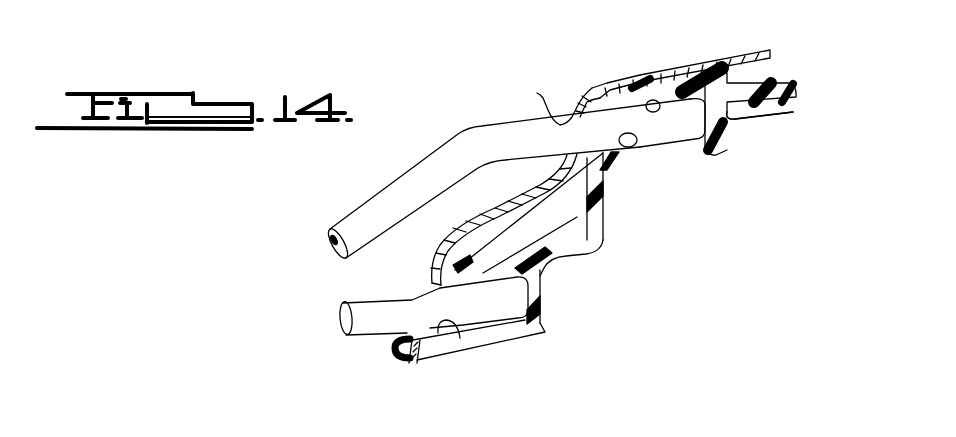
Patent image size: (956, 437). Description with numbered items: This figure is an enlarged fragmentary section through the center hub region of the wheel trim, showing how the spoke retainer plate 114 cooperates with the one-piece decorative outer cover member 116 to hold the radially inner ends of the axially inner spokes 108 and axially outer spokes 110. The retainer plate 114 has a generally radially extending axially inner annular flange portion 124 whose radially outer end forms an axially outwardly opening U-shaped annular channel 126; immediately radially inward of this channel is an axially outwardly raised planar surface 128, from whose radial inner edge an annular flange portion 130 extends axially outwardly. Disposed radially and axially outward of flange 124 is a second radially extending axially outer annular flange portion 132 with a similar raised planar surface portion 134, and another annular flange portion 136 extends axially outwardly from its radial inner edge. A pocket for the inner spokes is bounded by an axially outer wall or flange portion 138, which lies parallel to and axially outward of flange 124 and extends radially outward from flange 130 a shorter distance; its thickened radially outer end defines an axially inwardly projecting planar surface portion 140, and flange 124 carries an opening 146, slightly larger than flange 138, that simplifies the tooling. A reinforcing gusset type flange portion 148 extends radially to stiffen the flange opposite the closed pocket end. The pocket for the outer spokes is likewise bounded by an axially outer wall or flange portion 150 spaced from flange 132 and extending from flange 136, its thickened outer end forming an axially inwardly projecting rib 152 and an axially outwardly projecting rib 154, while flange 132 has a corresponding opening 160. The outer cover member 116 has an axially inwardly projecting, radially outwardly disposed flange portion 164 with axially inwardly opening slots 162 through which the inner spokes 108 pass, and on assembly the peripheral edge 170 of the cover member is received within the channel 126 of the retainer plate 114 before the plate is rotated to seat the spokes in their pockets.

The axially inner spokes 108 is at (360, 323).
The axially outer spokes 110 is at (360, 210).
The spoke retainer plate 114 is at (598, 262).
The outer cover member 116 is at (589, 80).
The axially inner annular flange portion 124 is at (448, 337).
The U-shaped annular channel 126 is at (390, 337).
The planar surface 128 is at (460, 338).
The annular flange portion 130 is at (542, 298).
The axially outer annular flange portion 132 is at (645, 156).
The planar surface portion 134 is at (637, 146).
The annular flange portion 136 is at (793, 112).
The axially outer wall or flange portion 138 is at (487, 265).
The planar surface portion 140 is at (428, 280).
The opening 146 is at (507, 328).
The reinforcing gusset type flange portion 148 is at (560, 218).
The axially outer wall or flange portion 150 is at (680, 63).
The axially inwardly projecting rib 152 is at (660, 92).
The axially outwardly projecting rib 154 is at (650, 100).
The opening 160 is at (712, 156).
The slots 162 is at (433, 287).
The flange portion 164 is at (545, 92).
The peripheral edge 170 is at (413, 353).